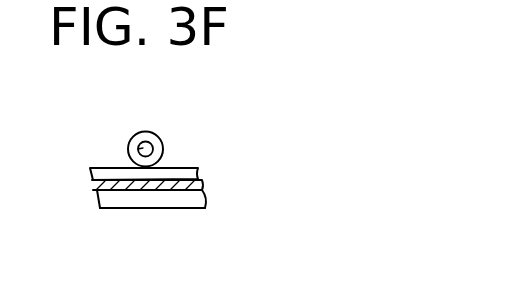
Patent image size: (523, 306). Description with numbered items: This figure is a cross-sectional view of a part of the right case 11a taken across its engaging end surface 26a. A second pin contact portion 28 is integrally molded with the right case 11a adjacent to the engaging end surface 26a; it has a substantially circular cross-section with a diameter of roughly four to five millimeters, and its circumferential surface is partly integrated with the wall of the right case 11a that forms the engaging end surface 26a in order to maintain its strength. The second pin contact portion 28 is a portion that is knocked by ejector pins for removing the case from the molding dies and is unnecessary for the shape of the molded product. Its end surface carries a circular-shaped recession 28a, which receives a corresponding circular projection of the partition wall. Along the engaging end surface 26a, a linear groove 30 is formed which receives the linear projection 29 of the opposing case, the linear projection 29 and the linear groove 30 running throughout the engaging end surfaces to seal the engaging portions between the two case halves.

The second pin contact portion 28 is at (146, 132).
The circular-shaped recession 28a is at (131, 148).
The engaging end surface 26a is at (184, 176).
The linear projection 29 is at (203, 185).
The right case 11a is at (120, 209).
The linear groove 30 is at (182, 201).